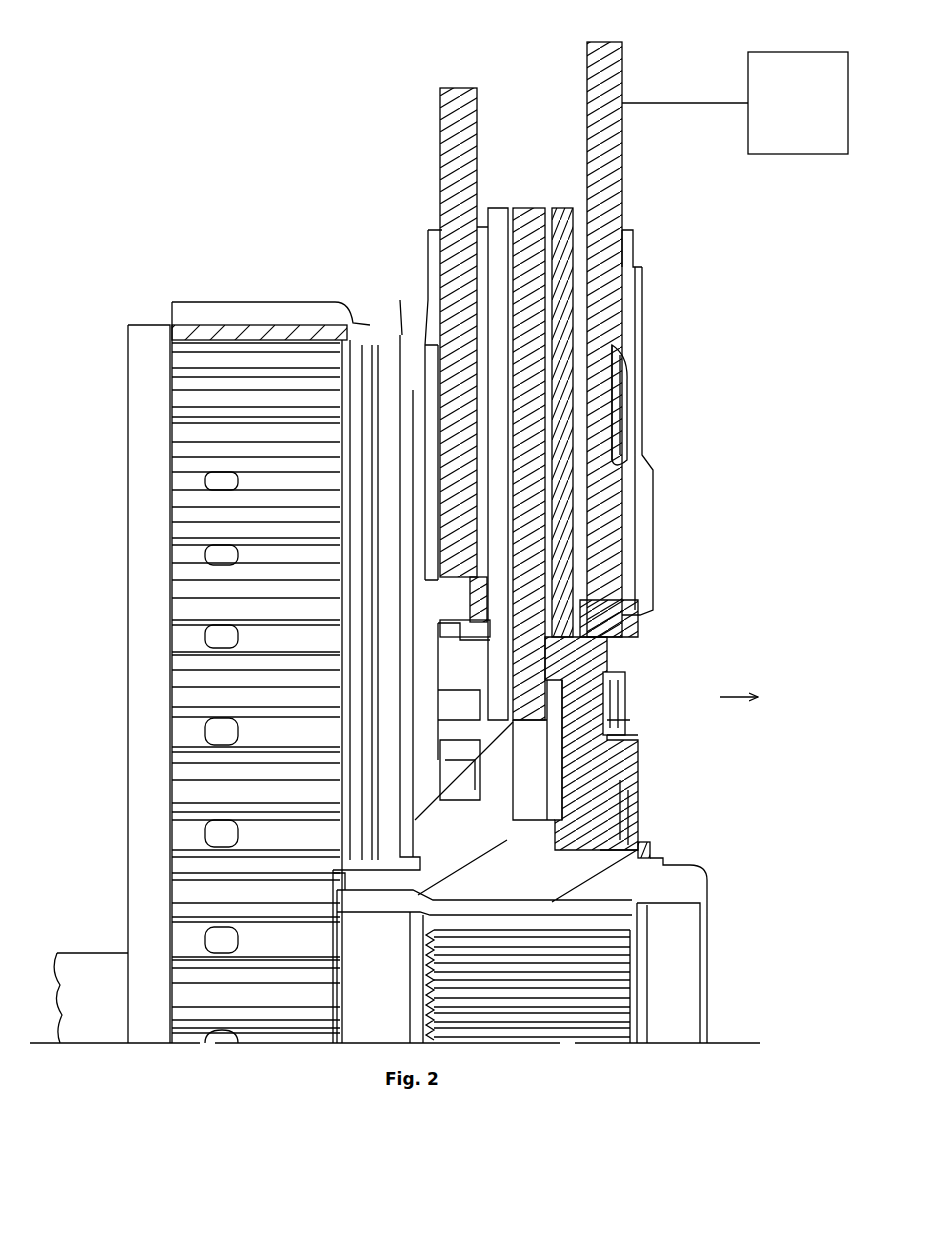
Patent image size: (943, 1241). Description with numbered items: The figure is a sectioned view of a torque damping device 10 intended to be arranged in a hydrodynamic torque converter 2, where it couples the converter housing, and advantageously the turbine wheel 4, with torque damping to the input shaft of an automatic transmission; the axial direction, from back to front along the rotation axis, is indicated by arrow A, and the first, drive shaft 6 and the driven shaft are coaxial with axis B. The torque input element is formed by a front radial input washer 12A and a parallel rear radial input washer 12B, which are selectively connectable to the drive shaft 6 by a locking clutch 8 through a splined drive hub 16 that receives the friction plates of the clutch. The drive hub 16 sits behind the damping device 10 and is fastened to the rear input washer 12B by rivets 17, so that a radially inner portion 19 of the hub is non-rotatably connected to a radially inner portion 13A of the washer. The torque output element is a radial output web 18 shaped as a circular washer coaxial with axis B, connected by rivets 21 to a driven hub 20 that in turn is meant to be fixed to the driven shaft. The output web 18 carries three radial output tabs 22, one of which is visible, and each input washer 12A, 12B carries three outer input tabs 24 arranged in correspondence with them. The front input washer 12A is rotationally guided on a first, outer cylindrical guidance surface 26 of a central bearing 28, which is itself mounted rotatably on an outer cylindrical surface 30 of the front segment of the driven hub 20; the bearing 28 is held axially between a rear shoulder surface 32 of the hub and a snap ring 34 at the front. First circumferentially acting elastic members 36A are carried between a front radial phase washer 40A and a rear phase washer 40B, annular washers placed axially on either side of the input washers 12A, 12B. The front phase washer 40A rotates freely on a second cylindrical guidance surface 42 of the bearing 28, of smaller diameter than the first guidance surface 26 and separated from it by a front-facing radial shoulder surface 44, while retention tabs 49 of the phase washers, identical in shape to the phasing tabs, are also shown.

The hydrodynamic torque converter 2 is at (658, 62).
The turbine wheel 4 is at (800, 160).
The first, drive shaft 6 is at (88, 955).
The locking clutch 8 is at (150, 325).
The damping device 10 is at (712, 195).
The first, front radial input washer 12A is at (567, 412).
The second, rear radial input washer 12B is at (503, 395).
The radially inner portion 13A is at (473, 687).
The splined drive hub 16 is at (238, 330).
The rivets 17 is at (603, 683).
The radial output web 18 is at (560, 508).
The radially inner portion 19 is at (460, 622).
The driven hub 20 is at (700, 875).
The rivets 21 is at (508, 743).
The radial output tabs 22 is at (605, 235).
The outer input tabs 24 is at (465, 248).
The first, outer cylindrical guidance surface 26 is at (613, 642).
The central bearing 28 is at (637, 782).
The outer cylindrical surface 30 is at (638, 848).
The shoulder surface 32 is at (640, 793).
The snap ring 34 is at (650, 853).
The first circumferentially acting elastic members 36A is at (618, 377).
The first, front radial phase washer 40A is at (607, 557).
The second, rear phase washer 40B is at (445, 477).
The second cylindrical guidance surface 42 is at (603, 727).
The front-facing radial shoulder surface 44 is at (615, 650).
The retention tabs 49 is at (400, 400).
The axial direction arrow A is at (749, 697).
The axis B is at (663, 987).